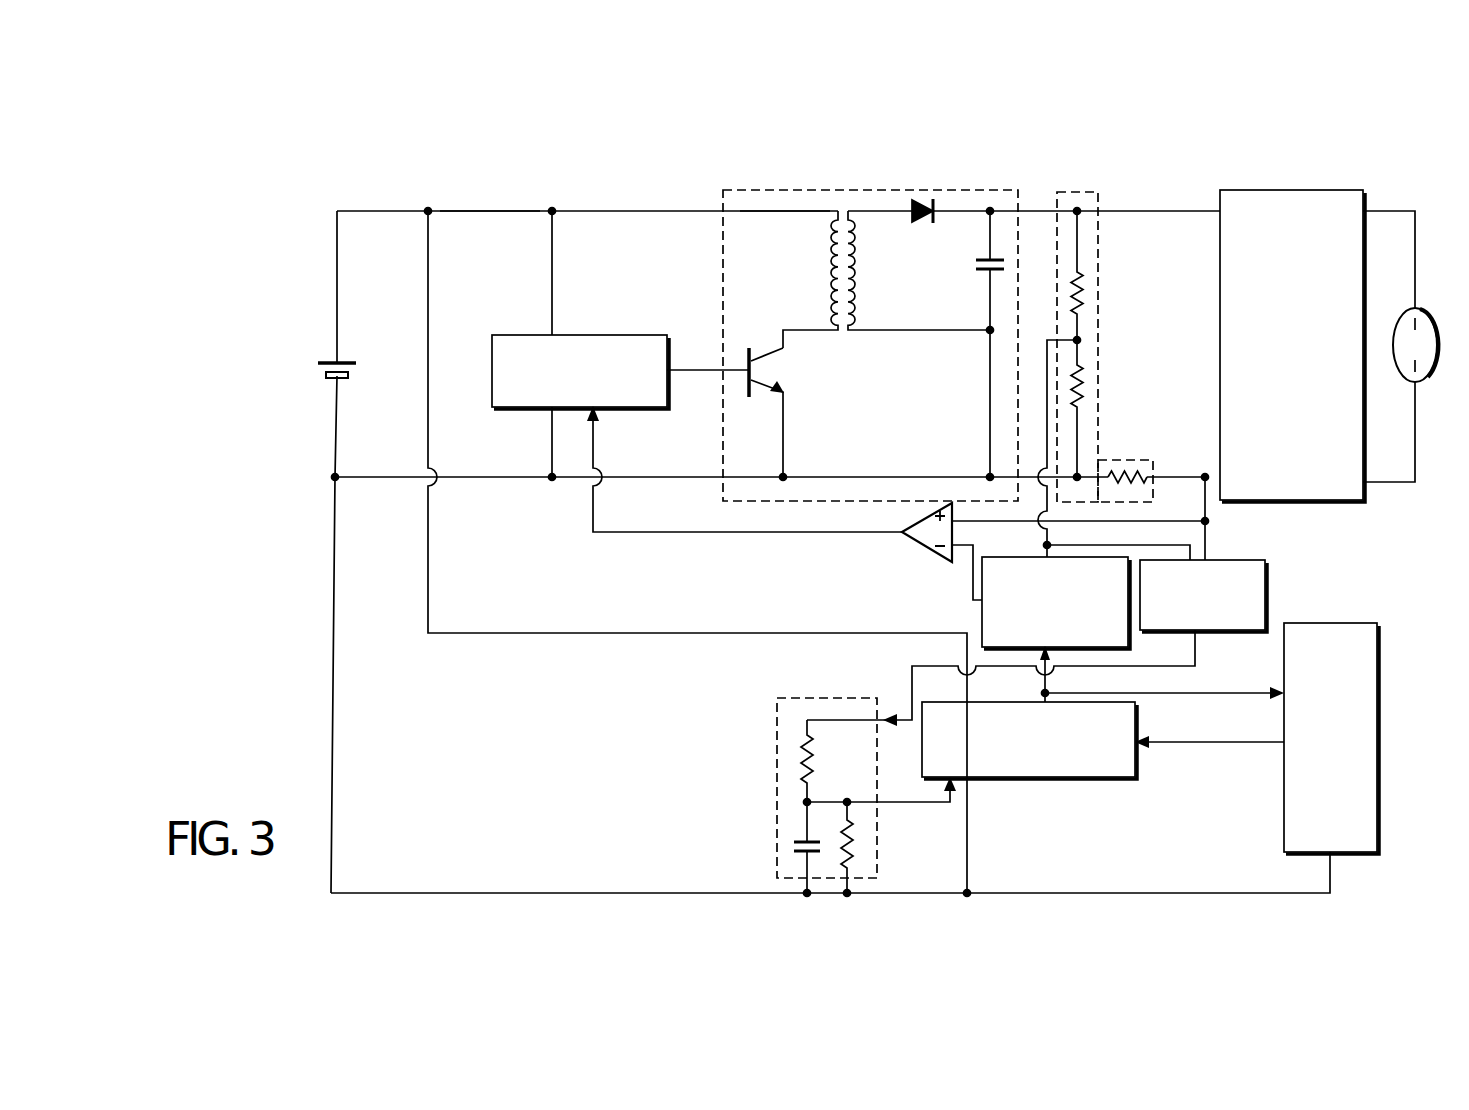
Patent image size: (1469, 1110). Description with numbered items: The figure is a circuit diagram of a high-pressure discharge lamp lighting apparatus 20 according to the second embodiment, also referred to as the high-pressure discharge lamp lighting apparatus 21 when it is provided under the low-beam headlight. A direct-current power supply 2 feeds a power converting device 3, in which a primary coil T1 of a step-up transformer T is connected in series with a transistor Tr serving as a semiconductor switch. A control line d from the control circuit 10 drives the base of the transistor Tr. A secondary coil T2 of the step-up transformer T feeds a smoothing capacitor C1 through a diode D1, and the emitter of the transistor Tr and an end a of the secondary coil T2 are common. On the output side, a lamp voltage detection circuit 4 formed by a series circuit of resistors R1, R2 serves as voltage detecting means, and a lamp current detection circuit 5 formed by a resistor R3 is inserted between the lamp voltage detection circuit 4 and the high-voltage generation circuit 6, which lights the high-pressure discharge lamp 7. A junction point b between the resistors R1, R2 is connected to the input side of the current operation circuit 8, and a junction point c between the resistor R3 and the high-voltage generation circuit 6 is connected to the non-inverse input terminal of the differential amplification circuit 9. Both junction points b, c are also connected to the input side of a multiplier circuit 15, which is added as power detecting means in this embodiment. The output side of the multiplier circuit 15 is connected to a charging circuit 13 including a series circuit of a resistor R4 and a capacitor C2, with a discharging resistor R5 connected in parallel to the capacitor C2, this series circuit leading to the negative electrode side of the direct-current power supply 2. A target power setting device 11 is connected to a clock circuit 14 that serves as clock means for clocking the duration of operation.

The direct-current power supply 2 is at (327, 364).
The power converting device 3 is at (961, 188).
The lamp voltage detection circuit 4 is at (1078, 190).
The lamp current detection circuit 5 is at (1111, 460).
The high-voltage generation circuit 6 is at (1289, 190).
The high-pressure discharge lamp 7 is at (1434, 372).
The current operation circuit 8 is at (981, 621).
The differential amplification circuit 9 is at (911, 546).
The control circuit 10 is at (624, 335).
The target power setting device 11 is at (1076, 780).
The charging circuit 13 is at (842, 698).
The clock circuit 14 is at (1378, 736).
The multiplier circuit 15 is at (1267, 578).
The high-pressure discharge lamp lighting apparatus 20 is at (905, 162).
The high-pressure discharge lamp lighting apparatus 21 is at (663, 162).
The step-up transformer T is at (845, 210).
The primary coil T1 is at (830, 278).
The secondary coil T2 is at (856, 278).
The transistor Tr is at (772, 361).
The diode D1 is at (918, 222).
The smoothing capacitor C1 is at (985, 272).
The capacitor C2 is at (796, 842).
The resistor R1 is at (1085, 292).
The resistor R2 is at (1085, 385).
The resistor R3 is at (1131, 474).
The resistor R4 is at (798, 758).
The discharging resistor R5 is at (858, 841).
The end of the secondary coil a is at (988, 336).
The junction point b is at (1080, 340).
The junction point c is at (1205, 474).
The control line d is at (705, 366).